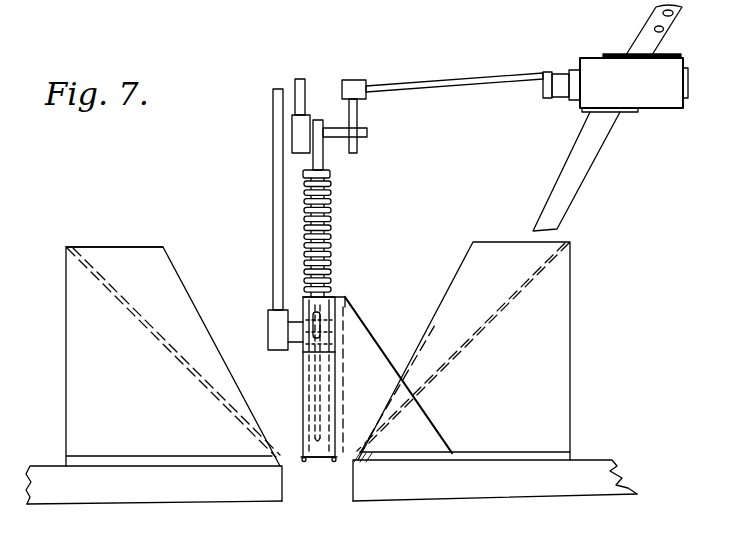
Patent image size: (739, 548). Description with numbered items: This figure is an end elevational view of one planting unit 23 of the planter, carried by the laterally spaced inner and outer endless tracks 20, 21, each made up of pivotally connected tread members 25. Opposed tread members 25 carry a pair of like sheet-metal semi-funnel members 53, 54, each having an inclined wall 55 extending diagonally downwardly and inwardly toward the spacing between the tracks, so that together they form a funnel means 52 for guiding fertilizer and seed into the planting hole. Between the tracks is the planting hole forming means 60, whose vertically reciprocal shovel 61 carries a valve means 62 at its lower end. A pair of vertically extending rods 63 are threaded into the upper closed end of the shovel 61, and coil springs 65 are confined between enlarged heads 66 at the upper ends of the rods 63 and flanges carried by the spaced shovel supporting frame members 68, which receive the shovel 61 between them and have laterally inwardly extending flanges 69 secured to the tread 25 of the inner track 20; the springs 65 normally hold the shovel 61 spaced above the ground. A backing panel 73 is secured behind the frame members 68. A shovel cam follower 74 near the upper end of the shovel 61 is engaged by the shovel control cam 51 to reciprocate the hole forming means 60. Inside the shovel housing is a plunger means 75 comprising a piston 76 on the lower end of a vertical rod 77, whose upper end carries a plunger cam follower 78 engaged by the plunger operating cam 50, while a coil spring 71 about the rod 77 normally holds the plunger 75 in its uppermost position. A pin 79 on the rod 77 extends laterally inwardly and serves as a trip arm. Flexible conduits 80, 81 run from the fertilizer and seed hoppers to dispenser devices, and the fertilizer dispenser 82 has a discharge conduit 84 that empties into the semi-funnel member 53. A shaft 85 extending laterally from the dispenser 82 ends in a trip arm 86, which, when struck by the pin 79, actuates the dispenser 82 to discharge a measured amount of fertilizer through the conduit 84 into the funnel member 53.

The inner endless track 20 is at (455, 502).
The outer endless track 21 is at (189, 504).
The planting unit 23 is at (203, 190).
The tread member 25 is at (396, 494).
The plunger operating cam 50 is at (301, 84).
The shovel control cam 51 is at (275, 235).
The funnel means 52 is at (116, 242).
The semi-funnel member 53 is at (558, 357).
The semi-funnel member 54 is at (75, 364).
The inclined wall 55 is at (540, 273).
The planting hole forming means 60 is at (297, 397).
The shovel 61 is at (303, 374).
The valve means 62 is at (318, 497).
The vertically extending rods 63 is at (334, 237).
The coil springs 65 is at (334, 257).
The enlarged heads 66 is at (334, 208).
The shovel supporting frame members 68 is at (372, 360).
The laterally inwardly extending flanges 69 is at (438, 457).
The coil spring 71 is at (332, 202).
The backing panel 73 is at (348, 335).
The shovel cam follower 74 is at (277, 330).
The plunger means 75 is at (296, 184).
The piston 76 is at (478, 2).
The rod 77 is at (333, 187).
The plunger cam follower 78 is at (300, 131).
The pin 79 is at (370, 132).
The flexible conduit 80 is at (643, 40).
The flexible conduit 81 is at (652, 14).
The fertilizer dispenser 82 is at (665, 104).
The discharge conduit 84 is at (583, 178).
The shaft 85 is at (410, 84).
The trip arm 86 is at (357, 111).